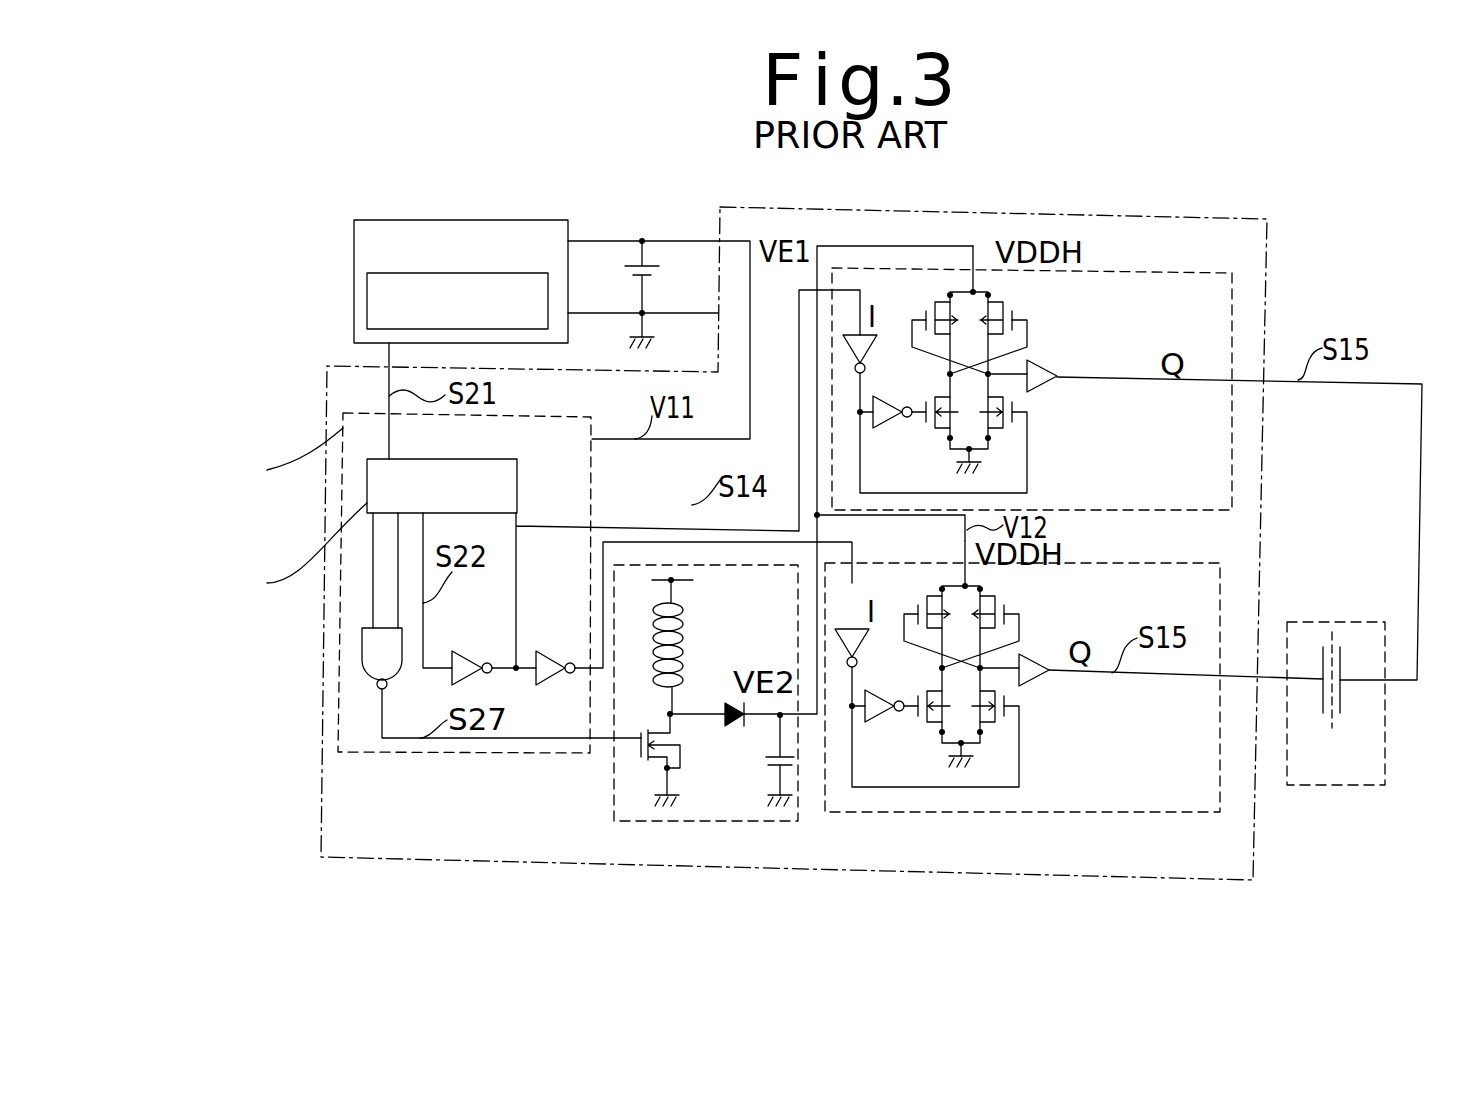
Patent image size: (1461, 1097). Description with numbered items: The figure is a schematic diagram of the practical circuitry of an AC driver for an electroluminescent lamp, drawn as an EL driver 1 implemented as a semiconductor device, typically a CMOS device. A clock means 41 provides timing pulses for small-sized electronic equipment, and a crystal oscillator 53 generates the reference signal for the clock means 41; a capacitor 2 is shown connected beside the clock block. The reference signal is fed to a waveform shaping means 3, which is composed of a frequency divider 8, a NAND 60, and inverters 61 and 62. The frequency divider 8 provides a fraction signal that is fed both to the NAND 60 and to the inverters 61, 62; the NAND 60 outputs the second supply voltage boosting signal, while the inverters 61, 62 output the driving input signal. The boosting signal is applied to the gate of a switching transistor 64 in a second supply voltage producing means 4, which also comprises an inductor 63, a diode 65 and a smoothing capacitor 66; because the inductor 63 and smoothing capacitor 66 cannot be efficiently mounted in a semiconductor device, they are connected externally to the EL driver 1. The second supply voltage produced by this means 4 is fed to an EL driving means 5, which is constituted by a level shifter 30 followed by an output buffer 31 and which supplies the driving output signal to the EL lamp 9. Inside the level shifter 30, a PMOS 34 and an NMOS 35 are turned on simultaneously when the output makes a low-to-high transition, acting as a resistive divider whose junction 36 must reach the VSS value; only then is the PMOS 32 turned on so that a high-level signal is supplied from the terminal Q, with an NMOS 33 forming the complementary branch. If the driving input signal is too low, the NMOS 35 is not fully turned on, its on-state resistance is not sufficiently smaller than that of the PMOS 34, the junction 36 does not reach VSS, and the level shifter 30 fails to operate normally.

The EL driver 1 is at (1233, 884).
The capacitor 2 is at (651, 277).
The waveform shaping means 3 is at (328, 448).
The second supply voltage producing means 4 is at (662, 820).
The EL driving means 5 is at (1213, 274).
The frequency divider 8 is at (367, 488).
The EL lamp 9 is at (1383, 727).
The level shifter 30 is at (958, 516).
The output buffer 31 is at (1035, 388).
The PMOS 32 is at (1005, 304).
The N-channel transistor 33 is at (1001, 433).
The PMOS 34 is at (930, 304).
The NMOS 35 is at (931, 433).
The junction 36 is at (948, 376).
The clock means 41 is at (354, 250).
The crystal oscillator 53 is at (367, 312).
The NAND 60 is at (501, 683).
The inverter 61 is at (470, 652).
The inverter 62 is at (553, 651).
The inductor 63 is at (683, 642).
The switching transistor 64 is at (645, 757).
The diode 65 is at (730, 727).
The smoothing capacitor 66 is at (764, 762).